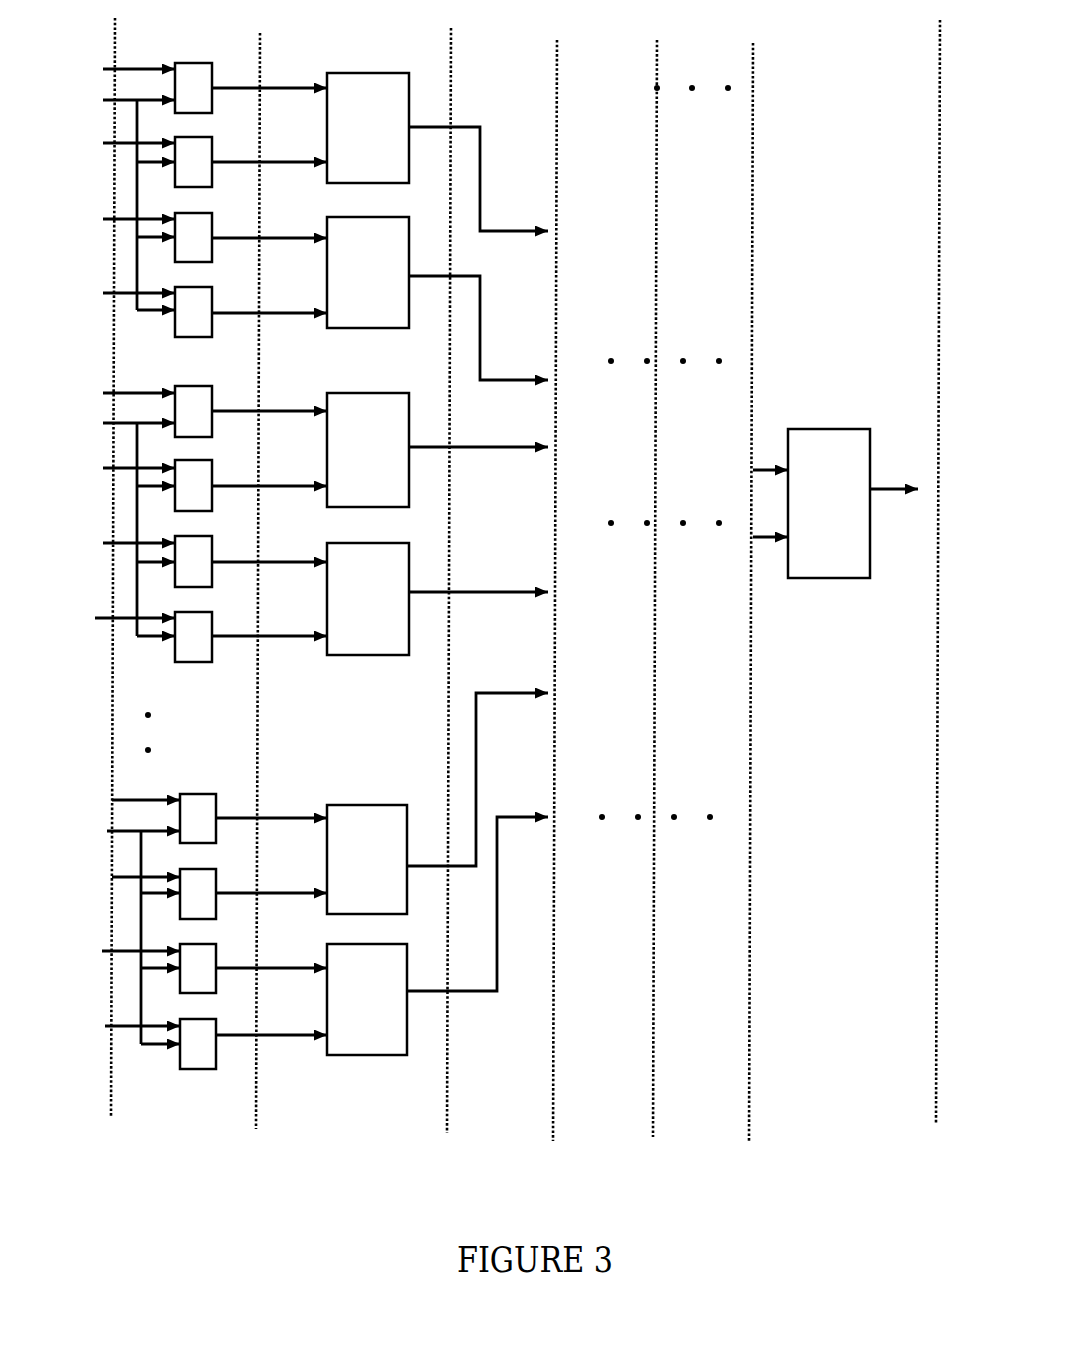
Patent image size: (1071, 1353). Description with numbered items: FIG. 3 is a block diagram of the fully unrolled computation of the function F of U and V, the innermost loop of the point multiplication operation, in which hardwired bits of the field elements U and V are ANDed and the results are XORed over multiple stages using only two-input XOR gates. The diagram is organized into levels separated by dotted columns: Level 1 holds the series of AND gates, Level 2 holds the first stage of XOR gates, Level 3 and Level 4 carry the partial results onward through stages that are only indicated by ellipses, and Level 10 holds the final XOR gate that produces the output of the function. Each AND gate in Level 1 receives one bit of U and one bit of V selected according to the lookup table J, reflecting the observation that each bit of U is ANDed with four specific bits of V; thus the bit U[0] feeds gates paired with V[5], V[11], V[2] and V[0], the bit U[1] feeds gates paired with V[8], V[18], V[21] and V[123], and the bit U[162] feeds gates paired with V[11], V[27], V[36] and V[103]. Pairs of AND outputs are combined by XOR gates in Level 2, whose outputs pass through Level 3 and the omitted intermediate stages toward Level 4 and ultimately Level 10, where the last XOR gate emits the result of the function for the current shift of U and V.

The level 1 AND gates 1 is at (192, 547).
The level 2 XOR gates 2 is at (233, 540).
The level 3 signal lines 3 is at (481, 508).
The level 4 (omitted levels) 4 is at (654, 422).
The level 10 final XOR gate 10 is at (860, 301).
The input bit V[5] 5 is at (117, 69).
The input bits U[0], V[0] 0 is at (115, 203).
The input bit V[11] 11 is at (112, 478).
The input bit V[8] 8 is at (117, 393).
The input bit V[18] 18 is at (113, 484).
The input bit V[21] 21 is at (113, 551).
The input bit V[123] 123 is at (105, 617).
The input bit U[162] 162 is at (110, 932).
The input bit V[27] 27 is at (112, 885).
The input bit V[36] 36 is at (112, 956).
The input bit V[103] 103 is at (109, 1023).